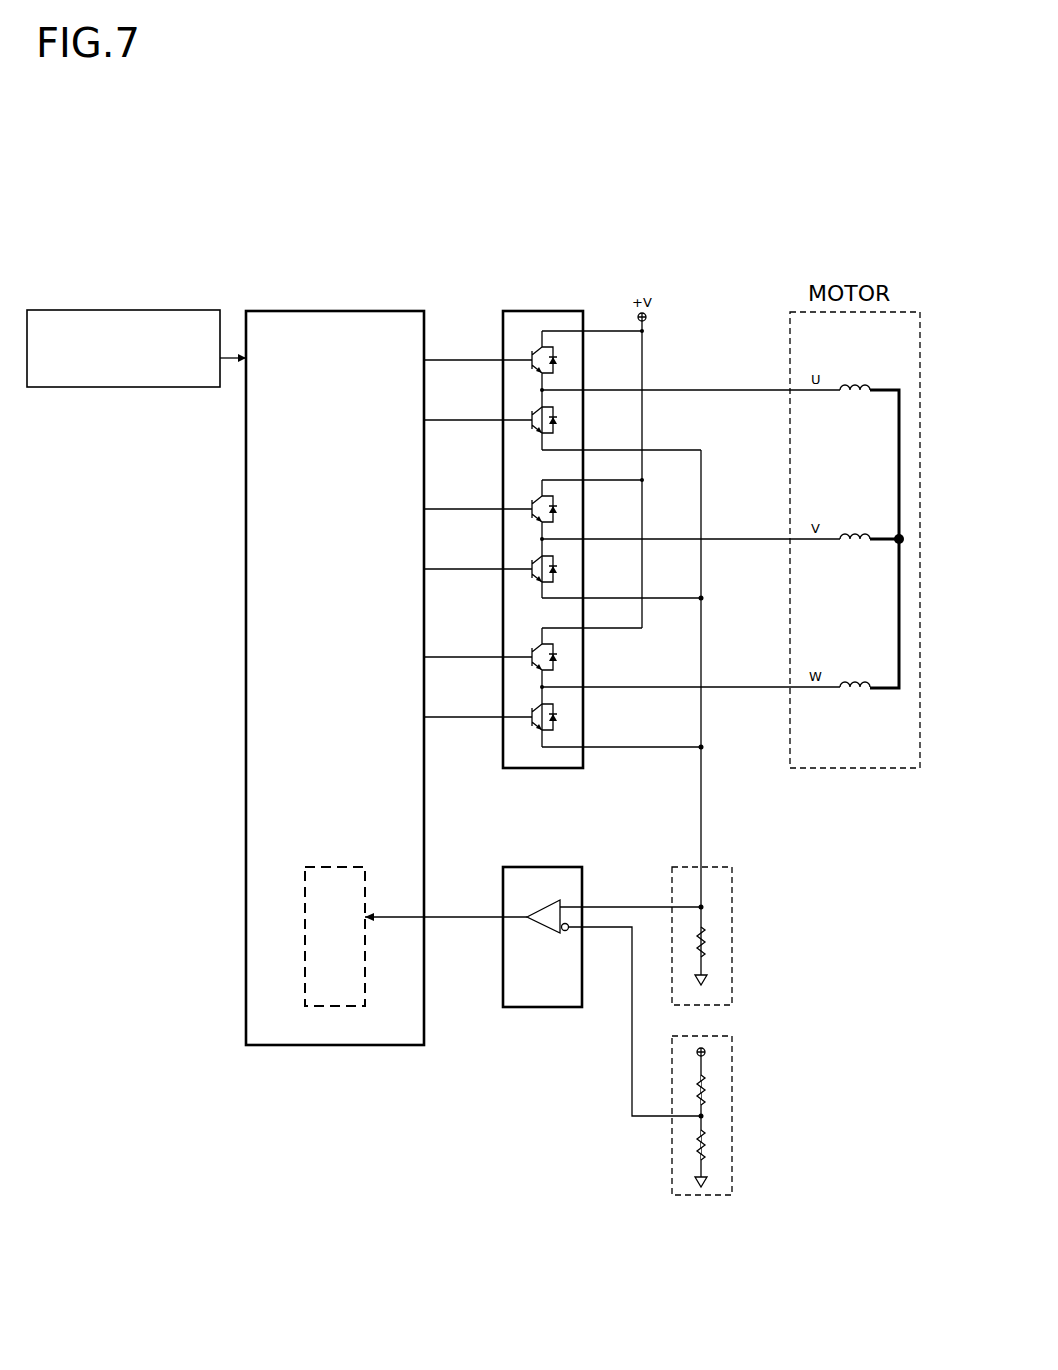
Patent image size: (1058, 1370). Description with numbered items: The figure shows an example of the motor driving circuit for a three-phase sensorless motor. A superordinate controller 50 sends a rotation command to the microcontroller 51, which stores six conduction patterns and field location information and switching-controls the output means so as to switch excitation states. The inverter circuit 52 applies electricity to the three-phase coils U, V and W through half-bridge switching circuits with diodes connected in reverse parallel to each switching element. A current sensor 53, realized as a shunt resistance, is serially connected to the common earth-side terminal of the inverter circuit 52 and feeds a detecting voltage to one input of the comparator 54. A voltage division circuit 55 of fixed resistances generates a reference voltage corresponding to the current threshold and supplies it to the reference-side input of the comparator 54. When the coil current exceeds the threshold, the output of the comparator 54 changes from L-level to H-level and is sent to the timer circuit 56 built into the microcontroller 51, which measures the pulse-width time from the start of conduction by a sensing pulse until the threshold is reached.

The superordinate controller 50 is at (124, 311).
The MPU 51 is at (353, 311).
The inverter circuit 52 is at (573, 311).
The current sensor 53 is at (732, 881).
The comparator 54 is at (572, 867).
The voltage division circuit 55 is at (730, 1083).
The timer circuit 56 is at (360, 867).